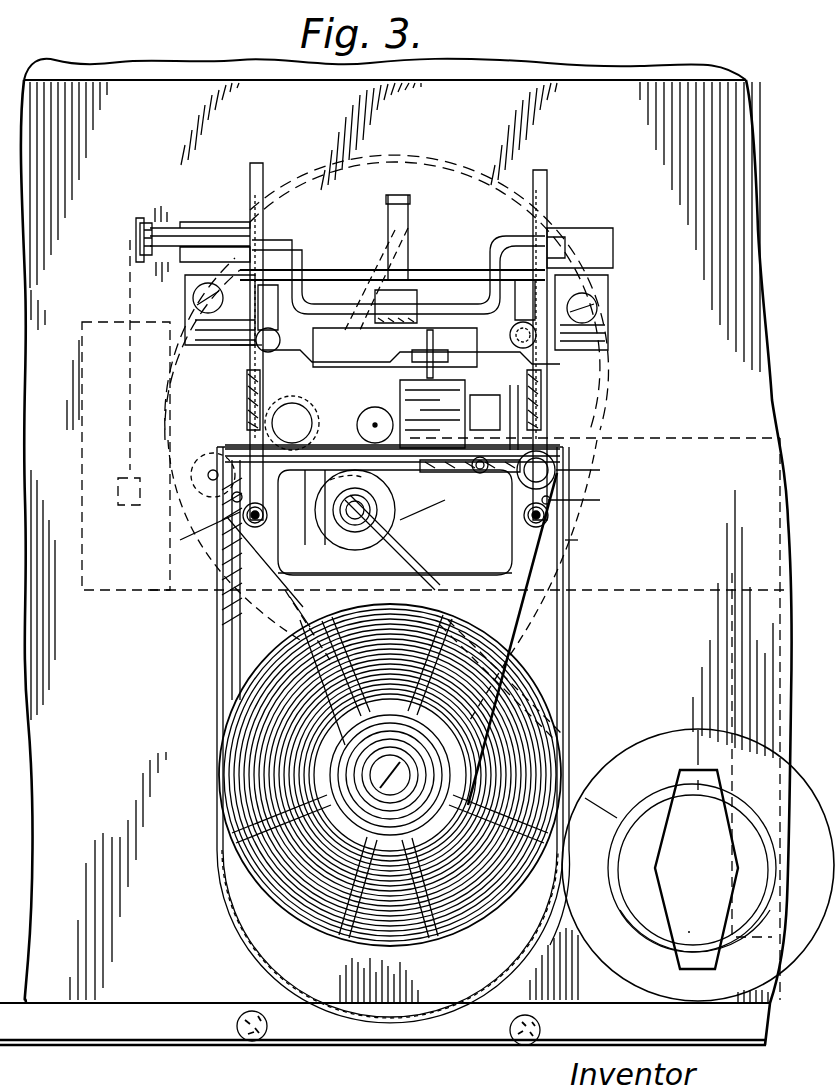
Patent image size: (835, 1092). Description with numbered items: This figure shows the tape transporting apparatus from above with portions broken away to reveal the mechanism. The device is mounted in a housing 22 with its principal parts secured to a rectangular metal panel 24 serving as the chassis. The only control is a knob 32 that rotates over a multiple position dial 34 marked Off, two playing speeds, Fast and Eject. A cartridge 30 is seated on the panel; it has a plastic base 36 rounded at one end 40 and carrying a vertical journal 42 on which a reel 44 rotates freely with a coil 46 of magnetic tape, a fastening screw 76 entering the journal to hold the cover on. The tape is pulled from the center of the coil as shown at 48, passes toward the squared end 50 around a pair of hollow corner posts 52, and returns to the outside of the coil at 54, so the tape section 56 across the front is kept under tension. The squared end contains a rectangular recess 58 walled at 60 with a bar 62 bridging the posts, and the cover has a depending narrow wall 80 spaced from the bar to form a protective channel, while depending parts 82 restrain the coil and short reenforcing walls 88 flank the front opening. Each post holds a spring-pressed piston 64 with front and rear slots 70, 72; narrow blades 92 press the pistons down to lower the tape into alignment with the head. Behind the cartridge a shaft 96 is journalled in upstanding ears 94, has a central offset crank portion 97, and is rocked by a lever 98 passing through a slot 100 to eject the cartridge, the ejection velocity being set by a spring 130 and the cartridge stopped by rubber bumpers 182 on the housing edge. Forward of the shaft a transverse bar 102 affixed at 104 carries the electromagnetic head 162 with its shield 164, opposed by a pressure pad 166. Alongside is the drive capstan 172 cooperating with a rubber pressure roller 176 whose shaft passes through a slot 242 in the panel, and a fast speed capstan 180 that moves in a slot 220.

The housing 22 is at (380, 1046).
The metal panel 24 is at (166, 971).
The cartridge 30 is at (290, 928).
The knob 32 is at (688, 932).
The dial 34 is at (595, 922).
The base 36 is at (565, 652).
The rounded end 40 is at (495, 928).
The vertical journal 42 is at (355, 778).
The reel 44 is at (560, 715).
The coil 46 is at (255, 740).
The tape pulled from coil center 48 is at (480, 728).
The squared end 50 is at (565, 453).
The hollow corner posts 52 is at (505, 512).
The tape returning to coil outside 54 is at (240, 690).
The tape section 56 is at (490, 470).
The rectangular recess 58 is at (578, 540).
The walls of recess 60 is at (305, 578).
The bar 62 is at (470, 480).
The piston 64 is at (600, 488).
The front vertical slot 70 is at (556, 470).
The rear vertical slot 72 is at (555, 500).
The fastening screw 76 is at (368, 790).
The depending narrow wall 80 is at (498, 450).
The depending integral parts 82 is at (420, 870).
The reenforcing wall 88 is at (548, 440).
The blades 92 is at (213, 530).
The upstanding ears 94 is at (240, 245).
The shaft 96 is at (188, 240).
The crank portion 97 is at (463, 300).
The lever 98 is at (140, 240).
The slot 100 is at (138, 228).
The bar 102 is at (507, 334).
The bar fastening 104 is at (226, 352).
The spring 130 is at (405, 200).
The electromagnetic head 162 is at (432, 389).
The shield 164 is at (422, 515).
The pressure pad 166 is at (470, 445).
The drive capstan 172 is at (395, 297).
The pressure roller 176 is at (360, 520).
The fast speed capstan 180 is at (262, 406).
The rubber bumpers 182 is at (258, 1012).
The slot 220 is at (376, 406).
The slot for pressure roller shaft 242 is at (330, 485).